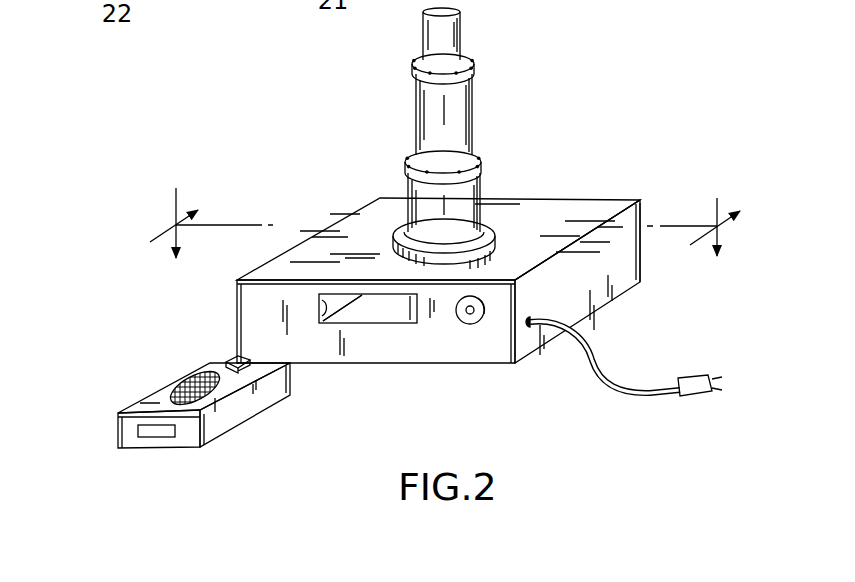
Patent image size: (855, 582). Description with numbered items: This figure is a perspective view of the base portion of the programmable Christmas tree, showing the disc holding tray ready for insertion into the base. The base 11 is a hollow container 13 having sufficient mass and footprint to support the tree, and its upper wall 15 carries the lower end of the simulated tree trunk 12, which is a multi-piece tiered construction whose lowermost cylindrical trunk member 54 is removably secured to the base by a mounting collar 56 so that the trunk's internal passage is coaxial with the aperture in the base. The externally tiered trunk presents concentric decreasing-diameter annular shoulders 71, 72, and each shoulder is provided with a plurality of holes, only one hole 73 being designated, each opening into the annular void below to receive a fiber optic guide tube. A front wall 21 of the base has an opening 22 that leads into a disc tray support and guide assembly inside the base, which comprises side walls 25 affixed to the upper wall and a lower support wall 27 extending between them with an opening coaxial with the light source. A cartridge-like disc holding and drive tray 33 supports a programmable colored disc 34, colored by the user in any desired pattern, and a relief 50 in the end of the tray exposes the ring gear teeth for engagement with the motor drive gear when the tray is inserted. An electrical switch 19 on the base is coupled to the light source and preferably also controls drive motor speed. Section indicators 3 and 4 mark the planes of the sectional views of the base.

The base 11 is at (600, 196).
The simulated tree trunk 12 is at (482, 106).
The container 13 is at (365, 207).
The upper wall 15 is at (623, 206).
The electrical switch 19 is at (480, 322).
The front wall 21 is at (393, 348).
The opening 22 is at (366, 316).
The side wall 25 is at (320, 314).
The lower support wall 27 is at (407, 311).
The disc holding and drive tray 33 is at (108, 417).
The programmable colored disc 34 is at (166, 383).
The relief 50 is at (222, 357).
The lower trunk member 54 is at (489, 157).
The mounting collar 56 is at (488, 228).
The annular shoulder 71 is at (418, 52).
The annular shoulder 72 is at (405, 170).
The hole 73 is at (470, 62).
The section line 3- 3 is at (431, 238).
The section line 4- 4 is at (442, 210).